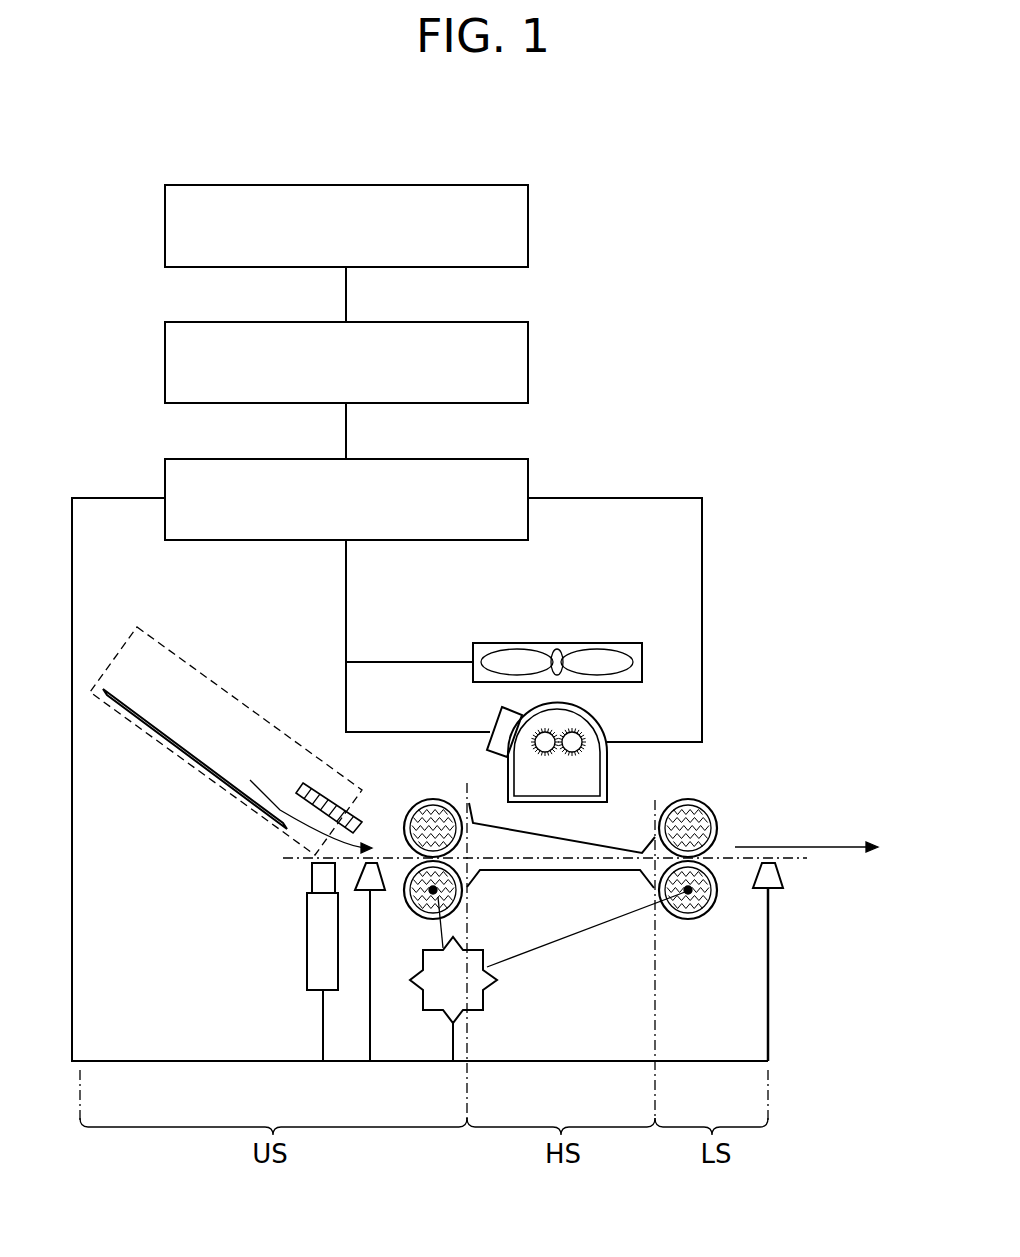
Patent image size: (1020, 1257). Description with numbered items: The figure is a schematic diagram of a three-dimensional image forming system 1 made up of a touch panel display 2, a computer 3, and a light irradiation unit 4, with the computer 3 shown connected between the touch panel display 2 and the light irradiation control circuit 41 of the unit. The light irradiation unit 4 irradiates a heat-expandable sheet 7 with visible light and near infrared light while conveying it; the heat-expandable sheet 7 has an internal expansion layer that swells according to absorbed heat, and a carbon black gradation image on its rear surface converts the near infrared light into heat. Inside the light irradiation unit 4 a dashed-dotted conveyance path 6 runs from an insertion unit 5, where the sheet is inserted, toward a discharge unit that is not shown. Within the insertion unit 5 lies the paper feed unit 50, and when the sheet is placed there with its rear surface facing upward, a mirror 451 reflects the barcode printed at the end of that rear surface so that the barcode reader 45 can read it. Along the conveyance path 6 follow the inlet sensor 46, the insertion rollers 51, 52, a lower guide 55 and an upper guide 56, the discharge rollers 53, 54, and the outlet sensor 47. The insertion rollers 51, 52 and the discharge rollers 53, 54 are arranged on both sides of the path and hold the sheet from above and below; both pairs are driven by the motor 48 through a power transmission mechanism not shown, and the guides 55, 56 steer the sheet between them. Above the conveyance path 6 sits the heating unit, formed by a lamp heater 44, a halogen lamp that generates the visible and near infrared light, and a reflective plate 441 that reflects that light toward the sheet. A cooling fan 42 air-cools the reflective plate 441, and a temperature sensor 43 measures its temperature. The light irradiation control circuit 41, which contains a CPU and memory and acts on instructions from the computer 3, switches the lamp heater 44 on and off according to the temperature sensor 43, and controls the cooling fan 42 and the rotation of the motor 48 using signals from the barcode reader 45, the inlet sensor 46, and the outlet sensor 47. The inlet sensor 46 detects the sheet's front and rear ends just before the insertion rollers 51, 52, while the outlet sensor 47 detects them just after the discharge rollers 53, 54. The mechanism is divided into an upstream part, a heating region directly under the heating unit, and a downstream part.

The three-dimensional image forming system 1 is at (627, 192).
The touch panel display 2 is at (447, 185).
The computer 3 is at (447, 322).
The light irradiation unit 4 is at (607, 468).
The light irradiation control circuit 41 is at (447, 459).
The cooling fan 42 is at (570, 646).
The temperature sensor 43 is at (494, 722).
The lamp heater 44 is at (580, 728).
The reflective plate 441 is at (607, 770).
The barcode reader 45 is at (306, 936).
The inlet sensor 46 is at (378, 889).
The outlet sensor 47 is at (778, 890).
The motor 48 is at (487, 992).
The insertion unit 5 is at (88, 700).
The paper feed unit 50 is at (165, 642).
The insertion roller 51 is at (460, 907).
The insertion roller 52 is at (431, 798).
The discharge roller 53 is at (688, 926).
The discharge roller 54 is at (720, 810).
The lower guide 55 is at (528, 872).
The upper guide 56 is at (567, 840).
The conveyance path 6 is at (807, 858).
The heat-expandable sheet 7 is at (183, 742).
The mirror 451 is at (327, 783).